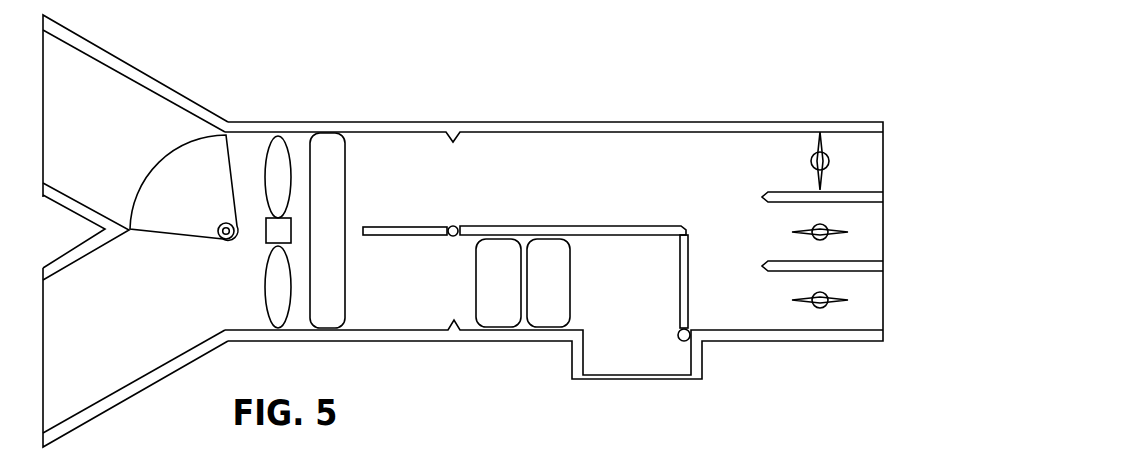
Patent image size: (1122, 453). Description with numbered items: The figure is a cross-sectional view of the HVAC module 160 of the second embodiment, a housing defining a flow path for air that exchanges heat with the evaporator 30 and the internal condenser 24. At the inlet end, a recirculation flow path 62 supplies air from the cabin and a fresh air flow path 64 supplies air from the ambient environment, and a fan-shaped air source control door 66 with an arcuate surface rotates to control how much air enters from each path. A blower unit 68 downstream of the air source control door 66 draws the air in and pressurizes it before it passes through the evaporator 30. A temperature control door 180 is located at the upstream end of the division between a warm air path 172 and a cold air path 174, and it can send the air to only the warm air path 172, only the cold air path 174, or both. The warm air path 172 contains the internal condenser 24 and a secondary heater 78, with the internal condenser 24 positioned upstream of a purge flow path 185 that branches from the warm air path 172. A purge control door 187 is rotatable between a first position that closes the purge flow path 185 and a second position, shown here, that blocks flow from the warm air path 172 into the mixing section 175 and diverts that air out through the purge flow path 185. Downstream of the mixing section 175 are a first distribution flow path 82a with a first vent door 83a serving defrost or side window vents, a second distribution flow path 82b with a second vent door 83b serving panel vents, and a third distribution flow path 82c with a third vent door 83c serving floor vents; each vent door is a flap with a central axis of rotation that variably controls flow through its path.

The HVAC module 160 is at (538, 121).
The fresh air flow path 64 is at (83, 142).
The recirculation flow path 62 is at (82, 337).
The air source control door 66 is at (178, 236).
The blower unit 68 is at (266, 229).
The evaporator 30 is at (317, 241).
The temperature control door 180 is at (410, 236).
The internal condenser 24 is at (487, 292).
The secondary heater 78 is at (538, 292).
The purge control door 187 is at (686, 283).
The purge flow path 185 is at (637, 370).
The warm air path 172 is at (601, 287).
The cold air path 174 is at (604, 189).
The mixing section 175 is at (718, 236).
The first vent door 83a is at (823, 150).
The first distribution flow path 82a is at (872, 162).
The second vent door 83b is at (823, 222).
The second distribution flow path 82b is at (872, 232).
The third vent door 83c is at (822, 293).
The third distribution flow path 82c is at (872, 303).